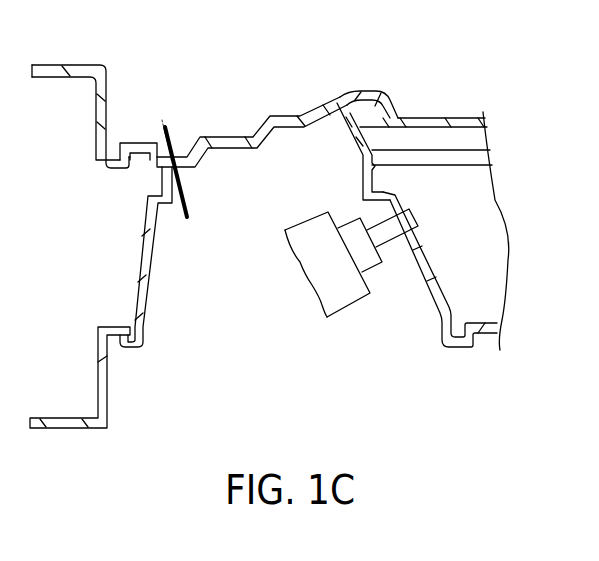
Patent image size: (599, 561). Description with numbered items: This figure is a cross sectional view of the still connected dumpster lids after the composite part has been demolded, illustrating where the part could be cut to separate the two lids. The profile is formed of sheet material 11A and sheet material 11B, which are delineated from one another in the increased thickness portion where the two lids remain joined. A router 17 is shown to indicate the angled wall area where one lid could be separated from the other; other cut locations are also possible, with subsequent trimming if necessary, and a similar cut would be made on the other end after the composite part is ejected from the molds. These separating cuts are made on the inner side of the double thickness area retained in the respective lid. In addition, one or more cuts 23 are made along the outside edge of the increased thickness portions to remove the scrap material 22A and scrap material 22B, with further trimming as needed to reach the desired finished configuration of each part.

The sheet material 11A is at (295, 113).
The sheet material 11B is at (241, 155).
The router 17 is at (350, 293).
The scrap material 22A is at (72, 68).
The scrap material 22B is at (103, 397).
The cut 23 is at (170, 130).